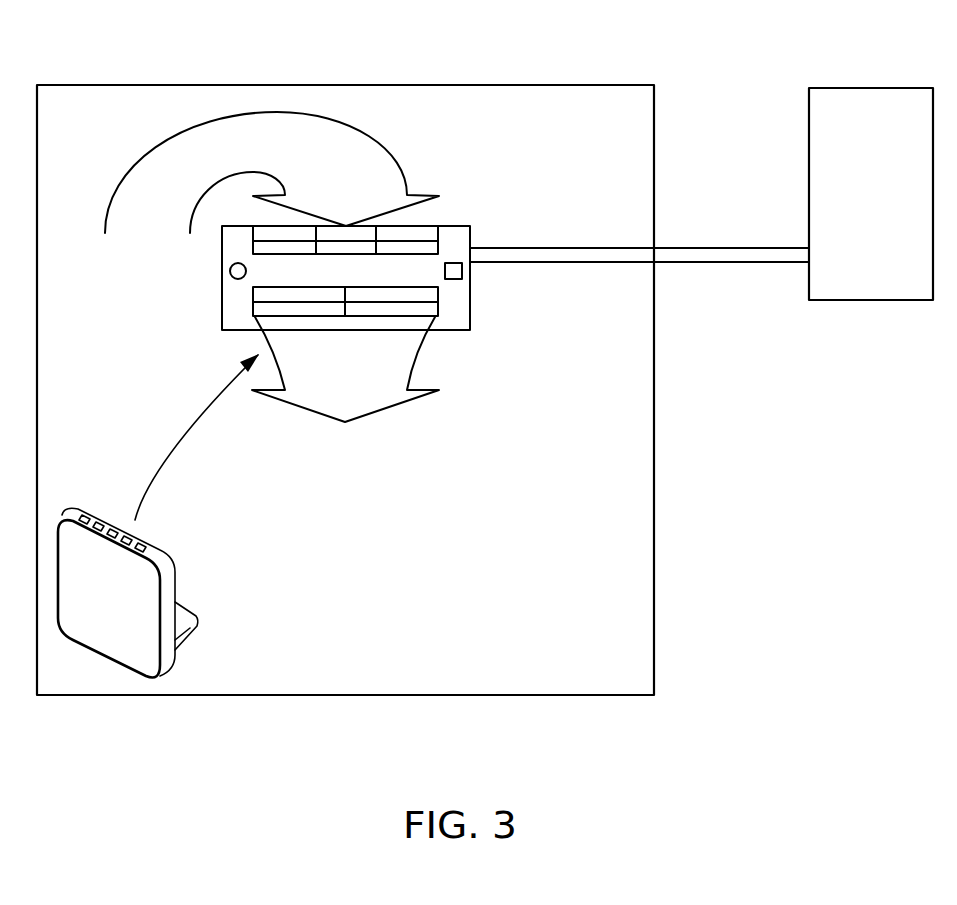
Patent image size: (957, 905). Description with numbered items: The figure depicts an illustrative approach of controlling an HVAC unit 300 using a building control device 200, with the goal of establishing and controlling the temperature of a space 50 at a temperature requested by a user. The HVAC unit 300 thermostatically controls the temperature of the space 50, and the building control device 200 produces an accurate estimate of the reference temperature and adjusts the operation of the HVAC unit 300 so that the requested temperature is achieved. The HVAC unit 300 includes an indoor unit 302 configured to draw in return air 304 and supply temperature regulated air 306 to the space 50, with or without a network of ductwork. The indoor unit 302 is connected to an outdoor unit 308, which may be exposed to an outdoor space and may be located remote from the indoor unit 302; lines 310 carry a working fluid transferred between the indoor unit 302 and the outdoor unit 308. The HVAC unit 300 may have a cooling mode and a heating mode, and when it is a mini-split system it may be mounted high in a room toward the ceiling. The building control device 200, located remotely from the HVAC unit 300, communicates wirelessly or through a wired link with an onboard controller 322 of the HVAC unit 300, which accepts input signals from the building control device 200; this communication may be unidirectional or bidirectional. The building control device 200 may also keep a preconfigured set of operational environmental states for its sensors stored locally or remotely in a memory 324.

The space 50 is at (628, 597).
The building control device 200 is at (193, 573).
The HVAC unit 300 is at (521, 277).
The indoor unit 302 is at (454, 232).
The return air 304 is at (177, 149).
The temperature regulated air 306 is at (375, 405).
The outdoor unit 308 is at (871, 87).
The lines 310 is at (688, 248).
The onboard controller 322 is at (455, 279).
The memory 324 is at (230, 271).